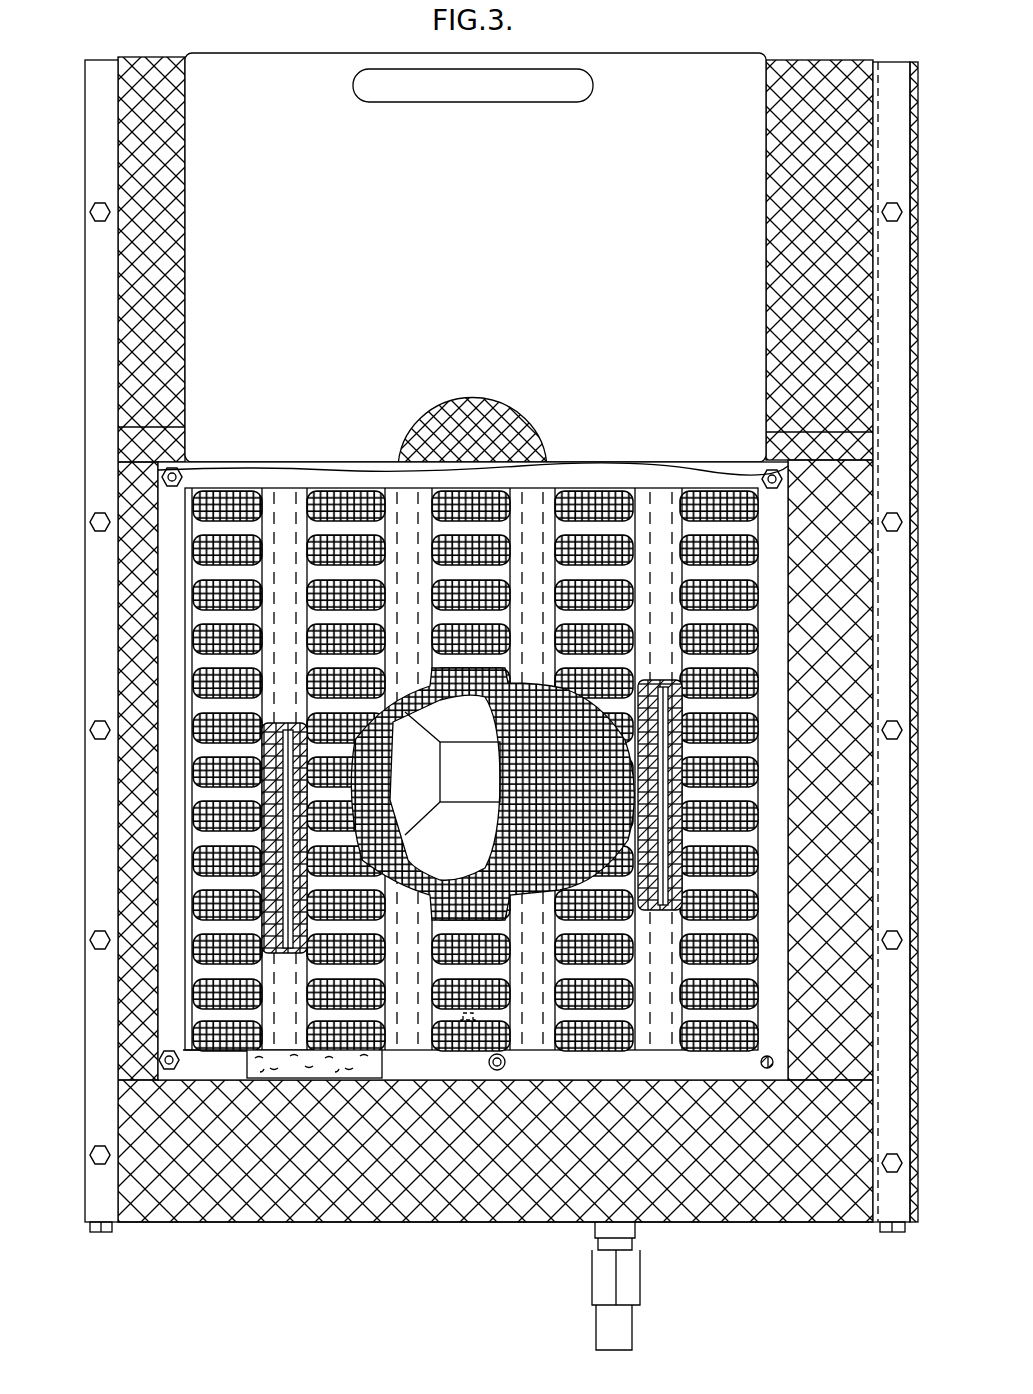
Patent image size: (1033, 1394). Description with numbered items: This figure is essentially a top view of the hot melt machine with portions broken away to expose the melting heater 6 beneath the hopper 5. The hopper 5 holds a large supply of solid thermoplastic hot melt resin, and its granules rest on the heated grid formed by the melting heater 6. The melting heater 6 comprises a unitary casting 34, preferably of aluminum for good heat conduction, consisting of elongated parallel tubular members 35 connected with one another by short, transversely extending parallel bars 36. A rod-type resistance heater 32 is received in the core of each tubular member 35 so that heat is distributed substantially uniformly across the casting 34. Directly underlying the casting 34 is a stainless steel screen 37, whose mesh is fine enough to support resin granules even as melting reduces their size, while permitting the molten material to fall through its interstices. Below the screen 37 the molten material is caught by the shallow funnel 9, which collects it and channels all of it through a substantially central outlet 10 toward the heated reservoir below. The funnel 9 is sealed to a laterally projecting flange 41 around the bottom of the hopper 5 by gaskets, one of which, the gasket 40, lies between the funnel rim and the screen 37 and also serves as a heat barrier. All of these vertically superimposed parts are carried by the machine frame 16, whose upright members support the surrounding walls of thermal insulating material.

The hopper 5 is at (672, 52).
The melting heater 6 is at (471, 743).
The funnel 9 is at (420, 786).
The central outlet 10 is at (443, 748).
The frame 16 is at (74, 835).
The resistance heater 32 is at (287, 950).
The unitary casting 34 is at (598, 1077).
The tubular members 35 is at (283, 497).
The bars 36 is at (424, 610).
The screen 37 is at (492, 794).
The gasket 40 is at (462, 1046).
The flange 41 is at (247, 1068).